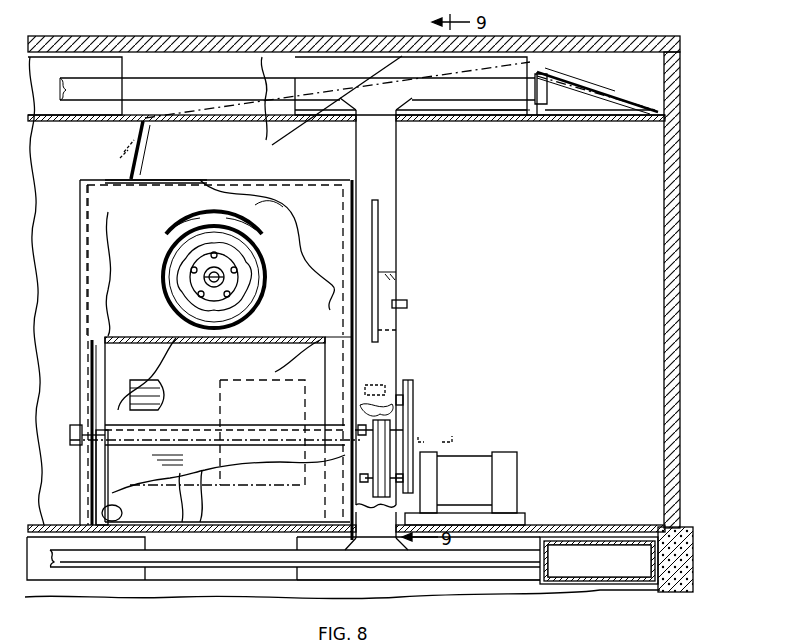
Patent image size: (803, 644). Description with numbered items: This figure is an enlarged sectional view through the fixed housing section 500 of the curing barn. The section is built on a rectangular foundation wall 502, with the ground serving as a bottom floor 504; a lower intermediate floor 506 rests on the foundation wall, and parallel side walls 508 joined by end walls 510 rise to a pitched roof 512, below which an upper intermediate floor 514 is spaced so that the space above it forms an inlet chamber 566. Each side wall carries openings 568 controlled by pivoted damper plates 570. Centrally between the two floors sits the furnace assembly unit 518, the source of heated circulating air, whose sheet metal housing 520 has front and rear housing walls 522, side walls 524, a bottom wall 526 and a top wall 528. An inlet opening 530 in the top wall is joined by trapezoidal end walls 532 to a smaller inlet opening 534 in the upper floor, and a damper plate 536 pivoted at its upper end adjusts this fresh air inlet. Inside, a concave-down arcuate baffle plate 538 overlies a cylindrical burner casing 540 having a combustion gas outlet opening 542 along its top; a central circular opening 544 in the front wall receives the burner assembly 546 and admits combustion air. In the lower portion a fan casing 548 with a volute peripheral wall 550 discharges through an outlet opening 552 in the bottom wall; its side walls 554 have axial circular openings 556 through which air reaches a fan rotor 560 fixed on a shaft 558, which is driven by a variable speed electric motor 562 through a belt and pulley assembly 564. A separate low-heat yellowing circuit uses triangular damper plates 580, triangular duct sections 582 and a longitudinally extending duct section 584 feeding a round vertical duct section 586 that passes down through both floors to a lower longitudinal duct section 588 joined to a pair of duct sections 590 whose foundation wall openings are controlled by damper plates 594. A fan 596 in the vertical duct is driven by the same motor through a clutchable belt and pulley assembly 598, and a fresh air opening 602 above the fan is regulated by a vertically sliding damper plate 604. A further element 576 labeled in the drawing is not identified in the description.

The fixed housing section 500 is at (381, 270).
The foundation wall 502 is at (693, 543).
The bottom floor 504 is at (200, 597).
The lower intermediate floor 506 is at (548, 525).
The side walls 508 is at (540, 332).
The end walls 510 is at (670, 287).
The roof 512 is at (258, 38).
The upper intermediate floor 514 is at (443, 122).
The furnace assembly unit 518 is at (118, 150).
The housing 520 is at (362, 191).
The front and rear housing walls 522 is at (328, 258).
The side walls 524 is at (357, 359).
The bottom wall 526 is at (200, 520).
The top wall 528 is at (125, 183).
The inlet opening 530 is at (145, 178).
The trapezoidal end walls 532 is at (283, 120).
The inlet opening 534 is at (150, 108).
The damper plate 536 is at (117, 167).
The baffle plate 538 is at (255, 208).
The burner casing 540 is at (165, 306).
The combustion gas outlet opening 542 is at (168, 232).
The central circular opening 544 is at (243, 287).
The burner assembly 546 is at (213, 276).
The fan casing 548 is at (346, 348).
The volute peripheral wall 550 is at (272, 359).
The outlet opening 552 is at (105, 512).
The side walls 554 is at (146, 385).
The circular opening 556 is at (110, 390).
The shaft 558 is at (72, 440).
The fan rotor 560 is at (160, 391).
The variable speed electric motor 562 is at (473, 470).
The belt and pulley assembly 564 is at (378, 458).
The inlet chamber 566 is at (158, 50).
The openings 568 is at (298, 60).
The damper plate 570 is at (517, 121).
The lower rail 576 is at (482, 573).
The triangular damper plate 580 is at (570, 100).
The triangular duct section 582 is at (618, 90).
The longitudinally extending duct section 584 is at (432, 88).
The round vertical duct section 586 is at (398, 216).
The longitudinally extending duct section 588 is at (233, 565).
The duct sections 590 is at (610, 540).
The damper plate 594 is at (572, 567).
The fan 596 is at (418, 378).
The belt and pulley assembly 598 is at (400, 425).
The fresh air opening 602 is at (400, 287).
The vertically sliding damper plate 604 is at (388, 318).